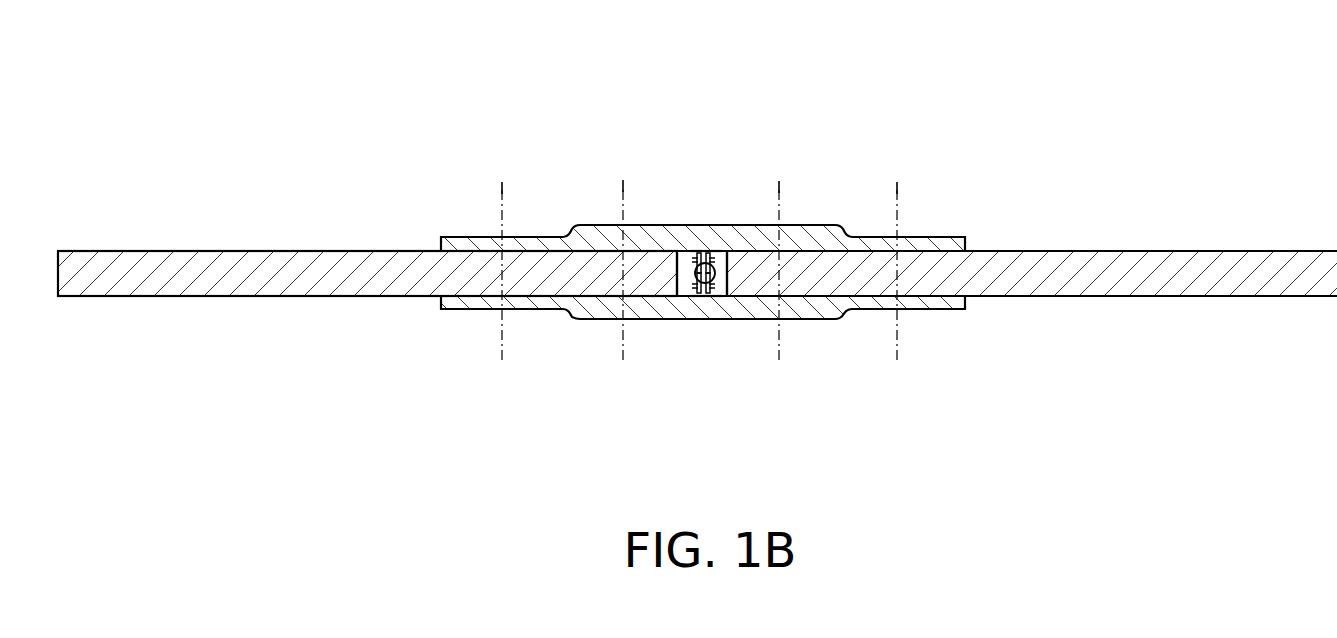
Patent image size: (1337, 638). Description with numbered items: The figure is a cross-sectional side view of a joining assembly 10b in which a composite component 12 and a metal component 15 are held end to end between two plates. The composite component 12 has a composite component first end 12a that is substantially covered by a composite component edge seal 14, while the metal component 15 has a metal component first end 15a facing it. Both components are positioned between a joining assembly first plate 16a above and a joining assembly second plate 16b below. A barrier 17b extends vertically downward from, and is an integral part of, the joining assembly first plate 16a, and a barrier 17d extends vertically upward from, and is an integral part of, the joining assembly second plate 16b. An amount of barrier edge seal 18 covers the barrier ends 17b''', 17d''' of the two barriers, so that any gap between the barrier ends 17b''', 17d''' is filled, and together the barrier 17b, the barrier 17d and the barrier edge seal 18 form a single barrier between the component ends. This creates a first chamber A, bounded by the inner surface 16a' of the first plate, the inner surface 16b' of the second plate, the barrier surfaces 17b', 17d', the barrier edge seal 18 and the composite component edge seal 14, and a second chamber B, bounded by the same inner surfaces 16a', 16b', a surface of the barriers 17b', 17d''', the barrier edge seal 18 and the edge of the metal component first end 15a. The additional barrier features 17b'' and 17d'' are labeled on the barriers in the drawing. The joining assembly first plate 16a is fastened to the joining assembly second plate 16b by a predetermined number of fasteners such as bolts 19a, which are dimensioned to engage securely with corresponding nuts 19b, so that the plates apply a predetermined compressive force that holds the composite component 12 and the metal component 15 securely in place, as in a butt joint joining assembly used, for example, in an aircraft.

The joining assembly 10b is at (366, 160).
The composite component 12 is at (290, 250).
The composite component first end 12a is at (677, 263).
The composite component edge seal 14 is at (682, 243).
The metal component 15 is at (1205, 250).
The metal component first end 15a is at (780, 282).
The joining assembly first plate 16a is at (747, 218).
The inner surface of the joining assembly first plate 16a' is at (696, 180).
The joining assembly second plate 16b is at (732, 349).
The inner surface of the joining assembly second plate 16b' is at (673, 363).
The barrier 17b is at (737, 186).
The surface of barrier 17b' is at (722, 212).
The retaining ring upper tab 17b'' is at (753, 200).
The barrier end 17b''' is at (774, 226).
The barrier 17d is at (700, 346).
The surface of barrier 17d' is at (679, 326).
The retaining ring lower tab 17d'' is at (727, 332).
The barrier end 17d''' is at (618, 330).
The barrier edge seal 18 is at (716, 270).
The bolts 19a is at (501, 188).
The nuts 19b is at (619, 368).
The first chamber A is at (592, 323).
The second chamber B is at (720, 278).